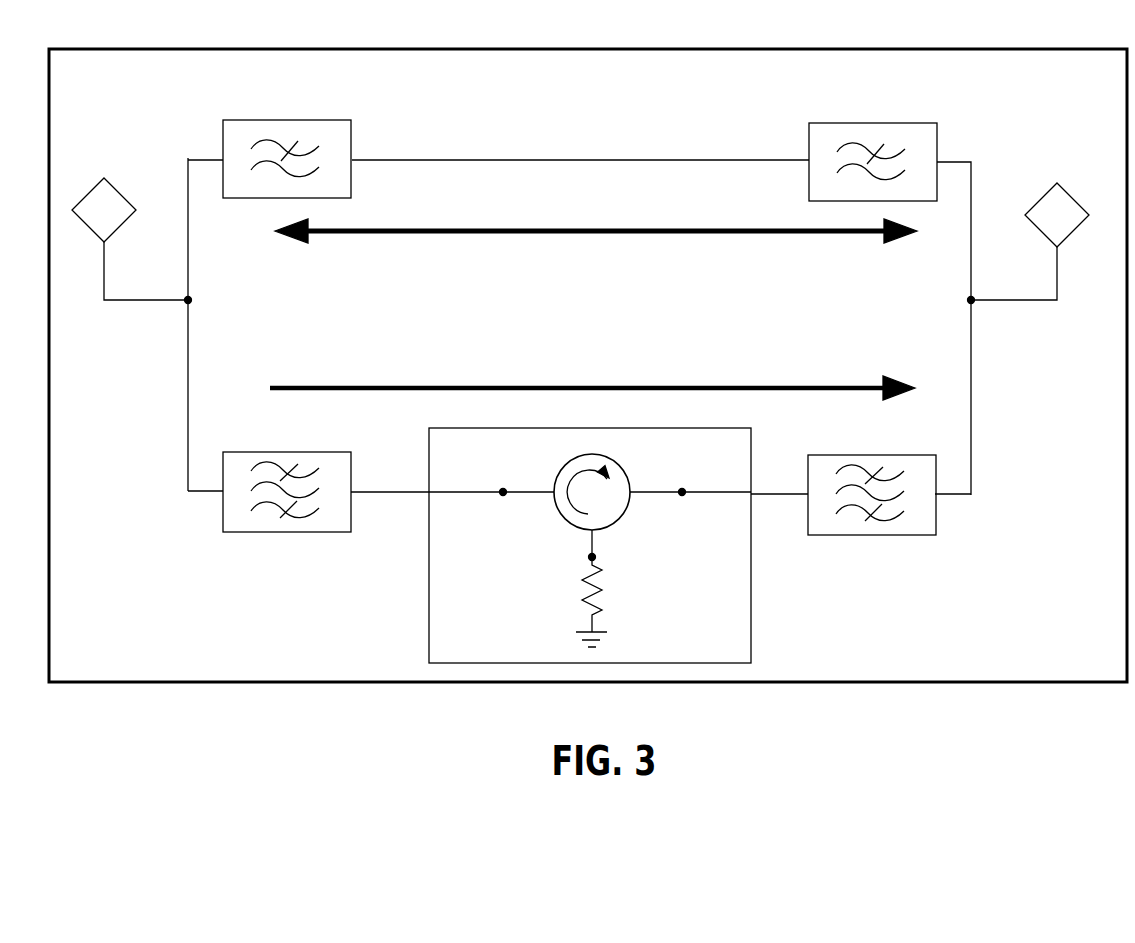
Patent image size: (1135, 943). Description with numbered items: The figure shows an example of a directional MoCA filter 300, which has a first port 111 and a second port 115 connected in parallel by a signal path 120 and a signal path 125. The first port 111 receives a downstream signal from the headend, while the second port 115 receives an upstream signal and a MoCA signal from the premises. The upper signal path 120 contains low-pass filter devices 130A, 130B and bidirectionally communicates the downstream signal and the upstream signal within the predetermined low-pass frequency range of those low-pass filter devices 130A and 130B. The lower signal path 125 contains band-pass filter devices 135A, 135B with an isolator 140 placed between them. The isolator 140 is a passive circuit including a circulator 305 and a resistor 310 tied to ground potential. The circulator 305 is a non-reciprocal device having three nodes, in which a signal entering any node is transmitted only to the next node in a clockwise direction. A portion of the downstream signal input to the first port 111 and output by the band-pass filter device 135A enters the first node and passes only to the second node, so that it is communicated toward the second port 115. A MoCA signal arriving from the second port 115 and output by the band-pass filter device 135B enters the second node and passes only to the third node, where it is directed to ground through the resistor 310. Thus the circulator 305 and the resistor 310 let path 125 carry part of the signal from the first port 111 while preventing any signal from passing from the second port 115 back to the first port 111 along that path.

The directional MoCA filter 300 is at (1092, 678).
The first port 111 is at (104, 210).
The second port 115 is at (1057, 215).
The signal path 120 is at (490, 236).
The signal path 125 is at (677, 385).
The low-pass filter device 130A is at (291, 120).
The low-pass filter device 130B is at (874, 123).
The band-pass filter device 135A is at (289, 533).
The band-pass filter device 135B is at (868, 536).
The isolator 140 is at (590, 545).
The circulator 305 is at (566, 460).
The resistor 310 is at (581, 580).